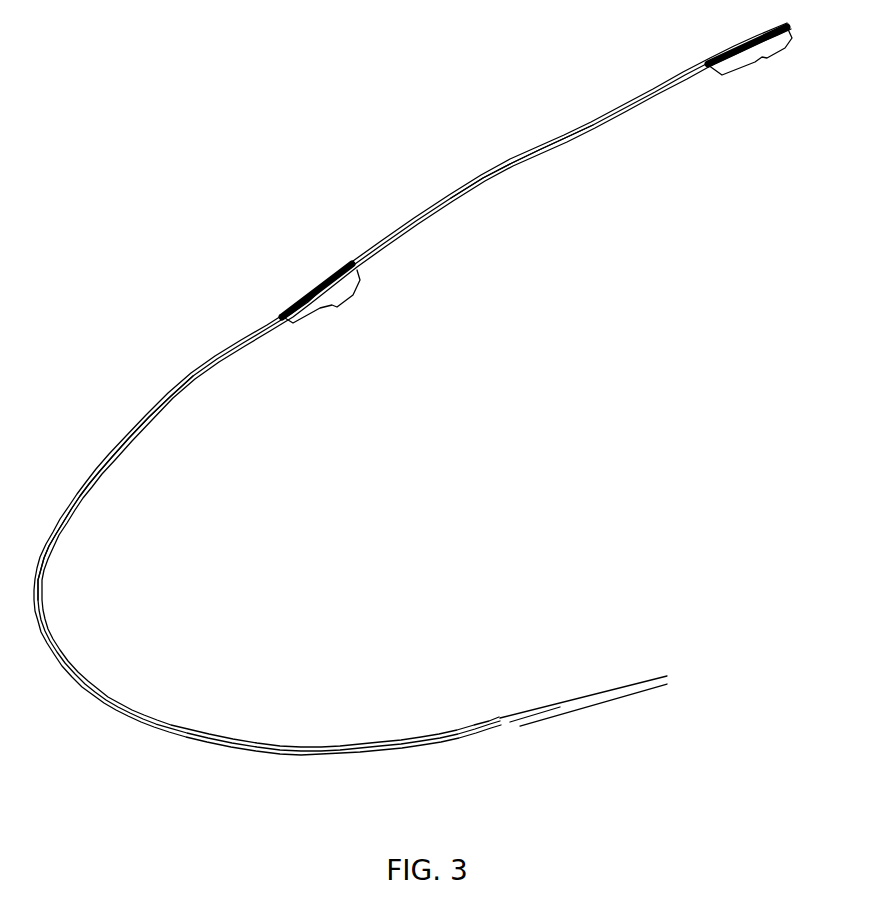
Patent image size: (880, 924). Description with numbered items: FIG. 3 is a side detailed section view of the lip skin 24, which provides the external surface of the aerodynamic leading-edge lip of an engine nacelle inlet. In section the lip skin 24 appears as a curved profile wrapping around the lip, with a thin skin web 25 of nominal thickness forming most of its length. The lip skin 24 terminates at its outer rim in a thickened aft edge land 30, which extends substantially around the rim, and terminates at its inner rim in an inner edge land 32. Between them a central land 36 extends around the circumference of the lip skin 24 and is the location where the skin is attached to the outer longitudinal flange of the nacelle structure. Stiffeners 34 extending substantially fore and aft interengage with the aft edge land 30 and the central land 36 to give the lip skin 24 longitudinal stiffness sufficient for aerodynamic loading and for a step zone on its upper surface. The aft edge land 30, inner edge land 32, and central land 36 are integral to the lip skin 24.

The lip skin 24 is at (247, 331).
The skin web 25 is at (167, 398).
The aft edge land 30 is at (762, 57).
The inner edge land 32 is at (560, 702).
The stiffeners 34 is at (507, 175).
The central land 36 is at (337, 307).